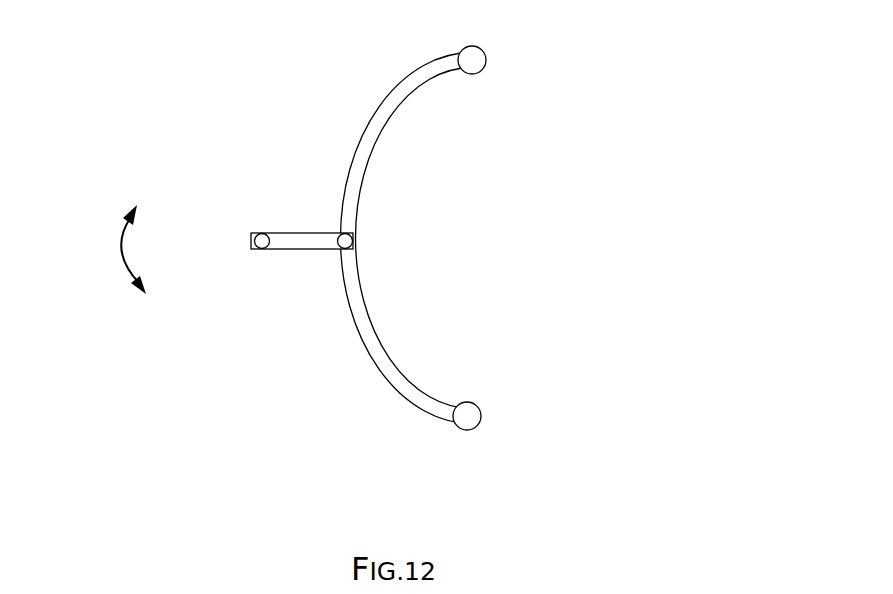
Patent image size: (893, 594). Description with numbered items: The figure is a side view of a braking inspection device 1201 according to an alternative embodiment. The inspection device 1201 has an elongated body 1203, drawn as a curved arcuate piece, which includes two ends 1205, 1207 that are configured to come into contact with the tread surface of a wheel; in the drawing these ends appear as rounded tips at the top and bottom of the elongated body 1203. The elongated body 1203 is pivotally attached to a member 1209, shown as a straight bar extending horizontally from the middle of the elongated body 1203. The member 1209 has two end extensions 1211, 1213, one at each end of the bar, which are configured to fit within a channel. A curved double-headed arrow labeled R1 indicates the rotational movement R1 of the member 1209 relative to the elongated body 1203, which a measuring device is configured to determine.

The inspection device 1201 is at (645, 88).
The elongated body 1203 is at (372, 119).
The end 1205 is at (482, 71).
The end 1207 is at (481, 418).
The member 1209 is at (304, 249).
The end extension 1211 is at (341, 228).
The end extension 1213 is at (252, 234).
The rotational movement R1 is at (120, 248).